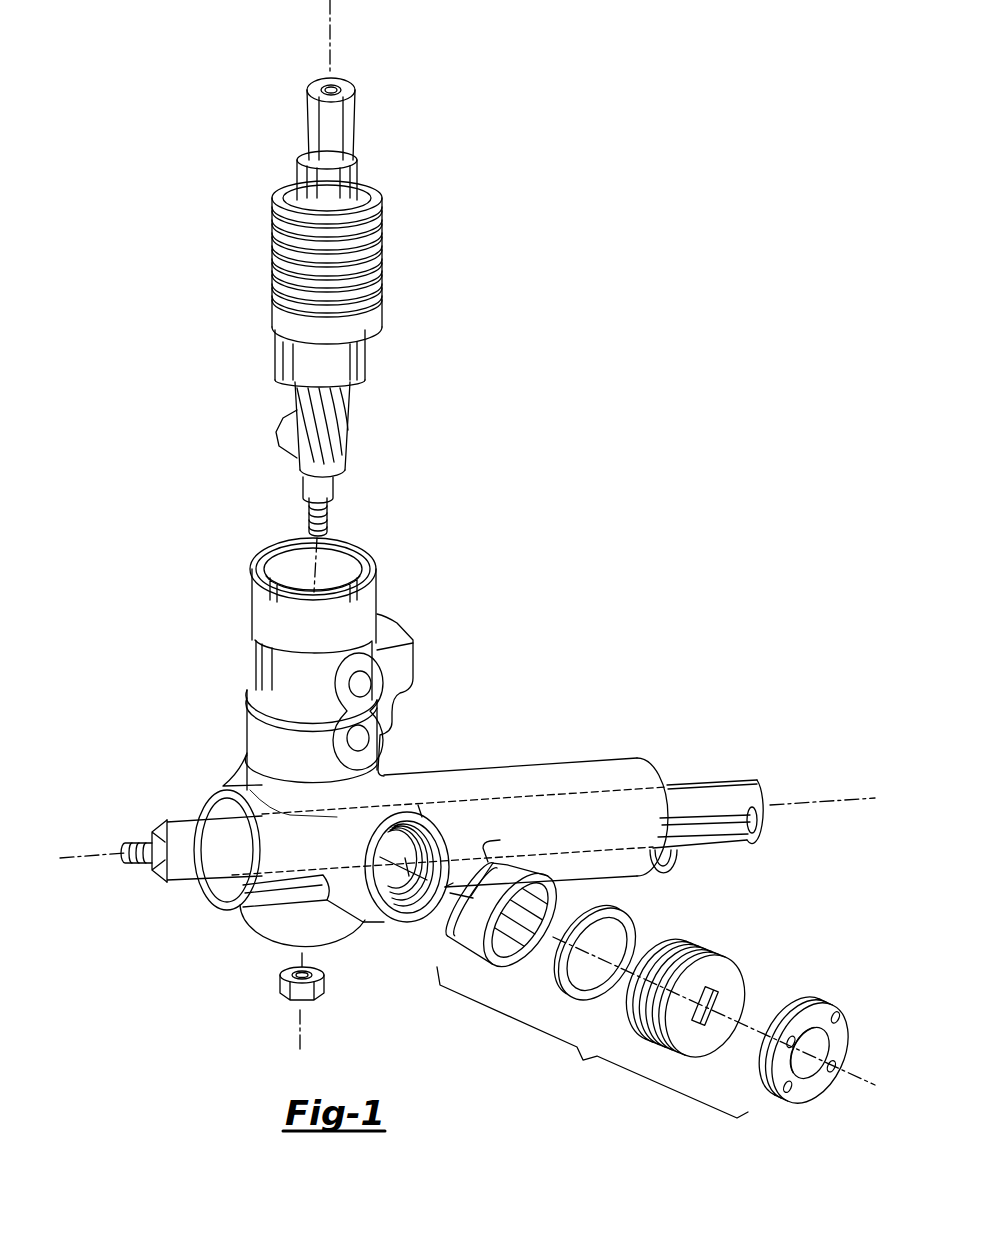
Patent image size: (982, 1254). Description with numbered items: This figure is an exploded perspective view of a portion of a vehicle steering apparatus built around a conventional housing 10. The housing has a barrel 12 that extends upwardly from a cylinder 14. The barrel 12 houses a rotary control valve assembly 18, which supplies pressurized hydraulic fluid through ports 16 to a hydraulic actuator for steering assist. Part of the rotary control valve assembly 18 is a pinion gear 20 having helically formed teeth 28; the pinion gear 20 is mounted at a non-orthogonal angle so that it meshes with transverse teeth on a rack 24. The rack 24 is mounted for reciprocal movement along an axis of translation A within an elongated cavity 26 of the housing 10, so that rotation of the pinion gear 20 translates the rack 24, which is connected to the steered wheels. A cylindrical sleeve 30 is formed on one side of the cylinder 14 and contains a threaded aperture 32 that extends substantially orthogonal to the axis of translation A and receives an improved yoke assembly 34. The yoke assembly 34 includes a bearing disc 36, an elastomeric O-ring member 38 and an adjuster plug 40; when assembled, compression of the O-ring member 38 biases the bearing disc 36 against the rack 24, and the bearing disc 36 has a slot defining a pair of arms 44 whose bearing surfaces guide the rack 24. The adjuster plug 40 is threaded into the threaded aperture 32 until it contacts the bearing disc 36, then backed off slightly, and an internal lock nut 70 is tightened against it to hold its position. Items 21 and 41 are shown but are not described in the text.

The housing 10 is at (487, 780).
The barrel 12 is at (250, 668).
The cylinder 14 is at (252, 918).
The ports 16 is at (371, 742).
The rotary control valve assembly 18 is at (382, 288).
The pinion gear 20 is at (344, 468).
The pinion tooth lug 21 is at (290, 437).
The rack 24 is at (697, 797).
The elongated cavity 26 is at (685, 858).
The helically formed teeth 28 is at (340, 140).
The cylindrical sleeve 30 is at (297, 1022).
The threaded aperture 32 is at (392, 925).
The yoke assembly 34 is at (592, 1042).
The bearing disc 36 is at (471, 939).
The elastomeric O-ring member 38 is at (617, 910).
The adjuster plug 40 is at (703, 953).
The yoke cradle 41 is at (473, 898).
The arms 44 is at (490, 856).
The internal lock nut 70 is at (825, 1003).
The axis of translation A is at (790, 800).